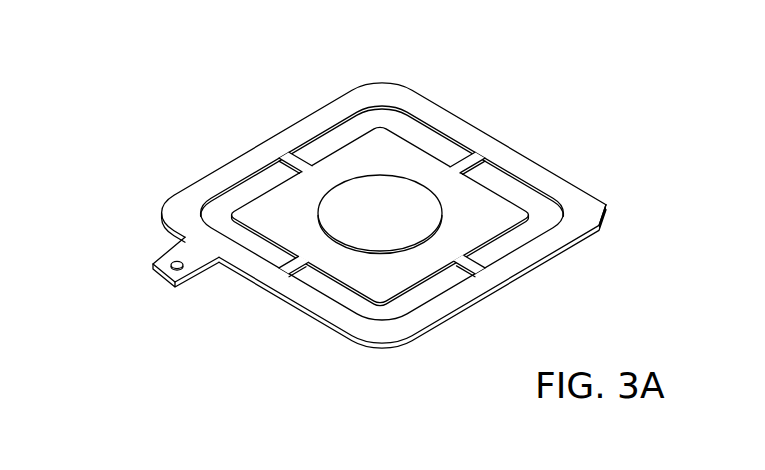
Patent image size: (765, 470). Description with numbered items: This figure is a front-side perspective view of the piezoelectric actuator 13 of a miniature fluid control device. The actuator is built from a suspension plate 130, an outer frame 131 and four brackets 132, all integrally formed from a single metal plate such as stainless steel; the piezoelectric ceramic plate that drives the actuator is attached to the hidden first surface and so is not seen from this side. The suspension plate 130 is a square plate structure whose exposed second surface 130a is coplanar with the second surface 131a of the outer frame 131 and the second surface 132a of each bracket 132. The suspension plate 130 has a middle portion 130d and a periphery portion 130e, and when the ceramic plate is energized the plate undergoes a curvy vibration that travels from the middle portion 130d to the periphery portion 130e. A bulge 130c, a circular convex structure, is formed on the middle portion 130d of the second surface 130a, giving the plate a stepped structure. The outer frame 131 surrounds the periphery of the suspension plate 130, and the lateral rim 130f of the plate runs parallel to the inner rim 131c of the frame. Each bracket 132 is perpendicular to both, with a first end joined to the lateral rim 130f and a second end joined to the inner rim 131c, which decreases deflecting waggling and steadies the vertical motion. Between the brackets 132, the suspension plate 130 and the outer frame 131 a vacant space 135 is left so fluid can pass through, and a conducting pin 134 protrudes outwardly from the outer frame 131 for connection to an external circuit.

The piezoelectric actuator 13 is at (97, 27).
The suspension plate 130 is at (371, 122).
The second surface 130a is at (383, 147).
The bulge 130c is at (402, 210).
The middle portion 130d is at (378, 191).
The periphery portion 130e is at (479, 204).
The lateral rim 130f is at (517, 233).
The outer frame 131 is at (406, 319).
The second surface 131a is at (371, 330).
The inner rim 131c is at (512, 252).
The bracket 132 is at (295, 157).
The second surface 132a is at (273, 157).
The conducting pin 134 is at (169, 262).
The vacant space 135 is at (543, 217).